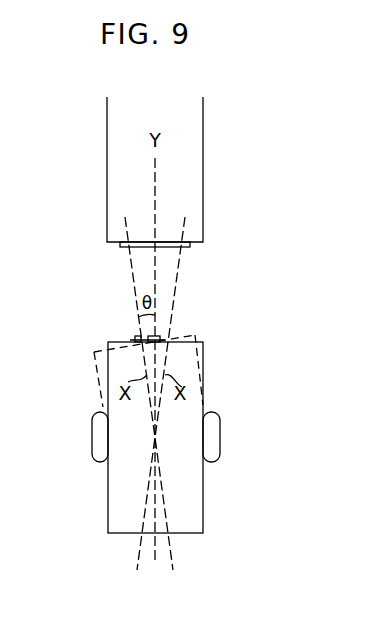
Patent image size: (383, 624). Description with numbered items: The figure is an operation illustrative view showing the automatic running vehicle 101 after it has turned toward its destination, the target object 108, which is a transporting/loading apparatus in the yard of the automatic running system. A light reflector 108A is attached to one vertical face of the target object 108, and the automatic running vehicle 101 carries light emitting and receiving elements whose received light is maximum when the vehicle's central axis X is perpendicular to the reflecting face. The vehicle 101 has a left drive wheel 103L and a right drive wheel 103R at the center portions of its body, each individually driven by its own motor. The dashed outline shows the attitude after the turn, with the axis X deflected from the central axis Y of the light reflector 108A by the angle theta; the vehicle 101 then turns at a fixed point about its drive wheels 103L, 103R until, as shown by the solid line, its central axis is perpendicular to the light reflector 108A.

The target object 108 is at (193, 123).
The light reflector 108A is at (190, 244).
The automatic running vehicle 101 is at (108, 525).
The left drive wheel 103L is at (94, 422).
The right drive wheel 103R is at (212, 414).